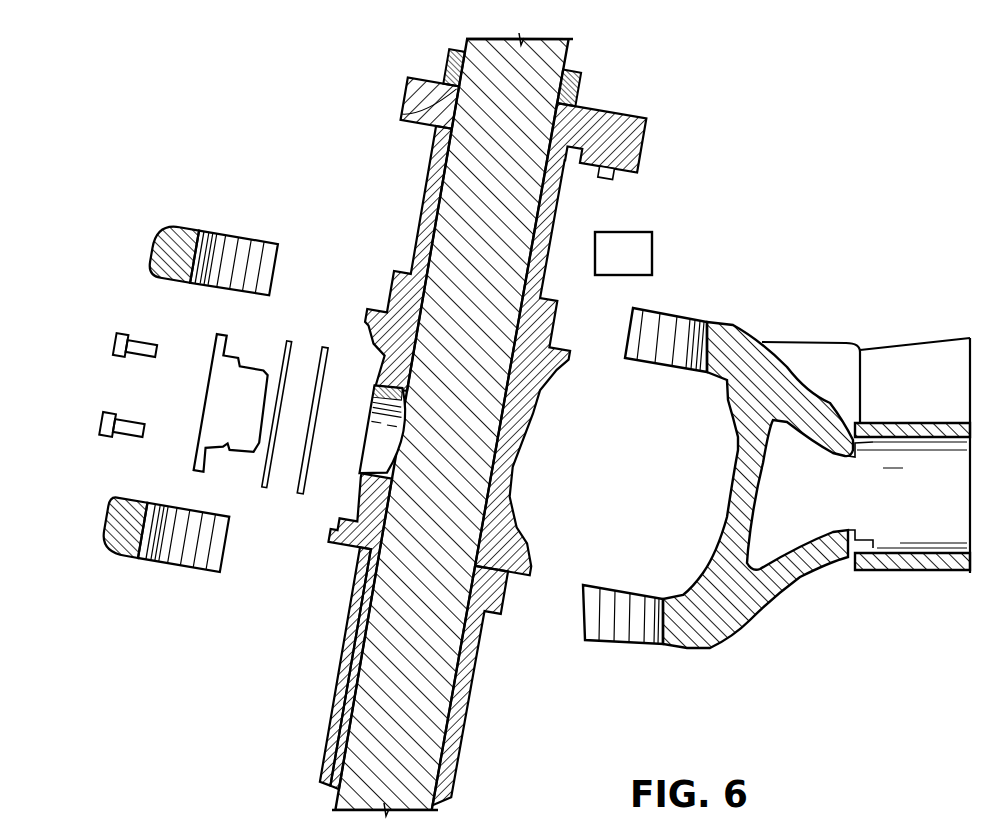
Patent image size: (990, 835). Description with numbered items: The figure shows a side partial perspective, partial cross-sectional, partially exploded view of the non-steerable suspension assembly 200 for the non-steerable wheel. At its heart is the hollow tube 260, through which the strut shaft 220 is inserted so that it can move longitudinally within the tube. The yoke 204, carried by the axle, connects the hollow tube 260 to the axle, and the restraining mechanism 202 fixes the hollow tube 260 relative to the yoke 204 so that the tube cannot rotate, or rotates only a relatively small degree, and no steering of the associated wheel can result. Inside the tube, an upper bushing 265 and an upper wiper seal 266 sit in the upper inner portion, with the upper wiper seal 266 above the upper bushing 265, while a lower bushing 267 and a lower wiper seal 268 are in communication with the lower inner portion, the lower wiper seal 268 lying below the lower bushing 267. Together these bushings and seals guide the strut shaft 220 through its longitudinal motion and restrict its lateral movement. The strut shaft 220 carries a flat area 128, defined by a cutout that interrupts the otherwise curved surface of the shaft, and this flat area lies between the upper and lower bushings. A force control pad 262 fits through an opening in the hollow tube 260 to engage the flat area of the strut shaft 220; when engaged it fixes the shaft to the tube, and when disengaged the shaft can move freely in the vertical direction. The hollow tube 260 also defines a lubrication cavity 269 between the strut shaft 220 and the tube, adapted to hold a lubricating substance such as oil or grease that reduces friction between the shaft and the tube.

The non-steerable suspension assembly 200 is at (198, 132).
The restraining mechanism 202 is at (640, 258).
The yoke 204 is at (718, 628).
The strut shaft 220 is at (347, 806).
The hollow tube 260 is at (463, 712).
The force control pad 262 is at (220, 412).
The upper bushing 265 is at (458, 90).
The upper wiper seal 266 is at (438, 213).
The lower bushing 267 is at (357, 655).
The lower wiper seal 268 is at (340, 722).
The lubrication cavity 269 is at (512, 460).
The flat area 128 is at (400, 489).